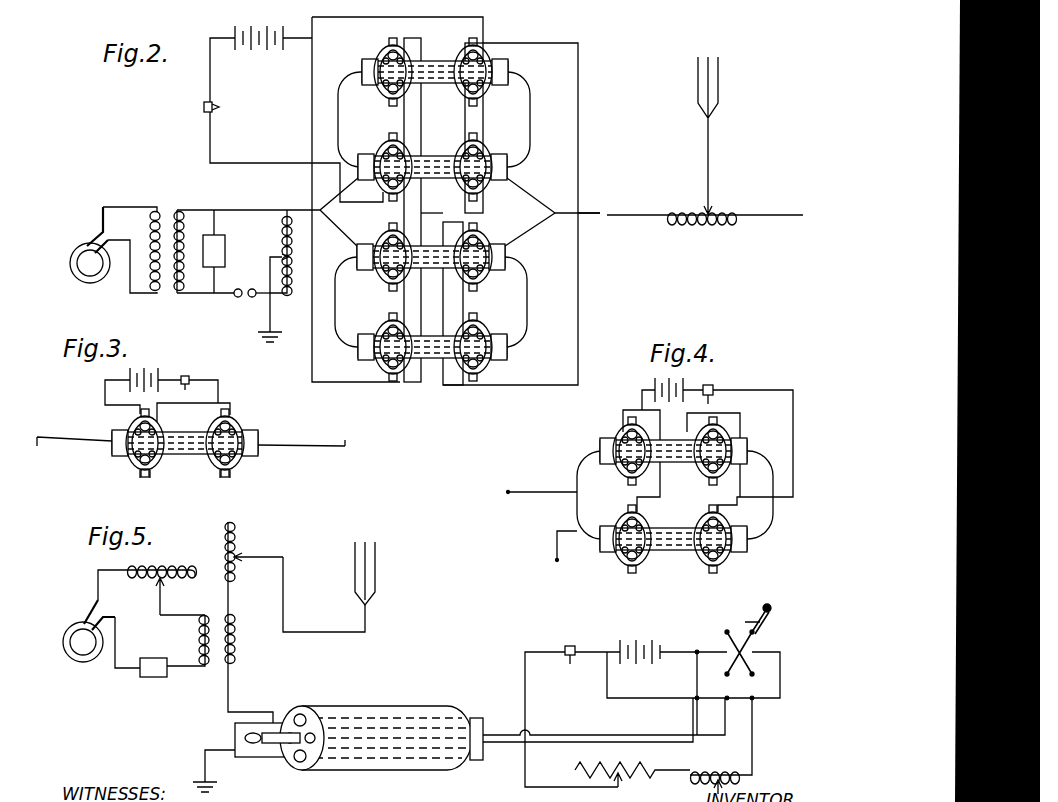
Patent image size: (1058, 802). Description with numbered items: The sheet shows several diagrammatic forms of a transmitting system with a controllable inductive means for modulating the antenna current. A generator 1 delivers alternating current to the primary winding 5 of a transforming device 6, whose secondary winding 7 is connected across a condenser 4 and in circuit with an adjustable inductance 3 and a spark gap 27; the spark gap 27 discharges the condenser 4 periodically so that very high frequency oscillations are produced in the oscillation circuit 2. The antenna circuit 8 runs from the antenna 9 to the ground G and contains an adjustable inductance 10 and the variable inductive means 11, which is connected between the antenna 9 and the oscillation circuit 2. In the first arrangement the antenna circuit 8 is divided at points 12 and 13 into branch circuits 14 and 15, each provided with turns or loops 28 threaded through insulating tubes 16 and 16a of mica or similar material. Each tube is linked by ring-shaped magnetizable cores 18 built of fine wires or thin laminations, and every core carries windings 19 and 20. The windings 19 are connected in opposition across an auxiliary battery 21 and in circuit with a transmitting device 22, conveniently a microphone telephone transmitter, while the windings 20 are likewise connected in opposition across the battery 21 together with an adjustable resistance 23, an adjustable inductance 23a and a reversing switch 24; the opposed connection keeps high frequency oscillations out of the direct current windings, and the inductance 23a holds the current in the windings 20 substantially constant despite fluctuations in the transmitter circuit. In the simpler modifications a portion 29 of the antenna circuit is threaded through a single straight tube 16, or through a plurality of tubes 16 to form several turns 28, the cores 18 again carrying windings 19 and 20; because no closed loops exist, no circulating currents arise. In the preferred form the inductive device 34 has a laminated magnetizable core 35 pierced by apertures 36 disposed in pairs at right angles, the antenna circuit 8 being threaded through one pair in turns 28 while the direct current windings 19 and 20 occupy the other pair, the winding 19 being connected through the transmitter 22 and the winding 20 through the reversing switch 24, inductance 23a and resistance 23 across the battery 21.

In FIG. 2, the generator 1 is at (90, 245).
In FIG. 5, the generator 1 is at (89, 631).
In FIG. 2, the oscillation circuit 2 is at (245, 210).
In FIG. 2, the adjustable inductance 3 is at (281, 234).
In FIG. 2, the condenser 4 is at (226, 252).
In FIG. 5, the condenser 4 is at (141, 647).
In FIG. 2, the primary winding 5 is at (150, 236).
In FIG. 5, the primary winding 5 is at (151, 590).
In FIG. 2, the transforming device 6 is at (168, 207).
In FIG. 2, the secondary winding 7 is at (186, 236).
In FIG. 5, the secondary winding 7 is at (188, 640).
In FIG. 2, the antenna circuit 8 is at (628, 212).
In FIG. 5, the antenna circuit 8 is at (235, 680).
In FIG. 2, the antenna 9 is at (720, 95).
In FIG. 5, the antenna 9 is at (365, 573).
In FIG. 2, the adjustable inductance 10 is at (722, 214).
In FIG. 2, the variable inductive means 11 is at (445, 201).
In FIG. 2, the point 12 is at (335, 216).
In FIG. 3, the point 12 is at (73, 454).
In FIG. 4, the point 12 is at (530, 506).
In FIG. 2, the point 13 is at (557, 216).
In FIG. 3, the point 13 is at (341, 450).
In FIG. 4, the point 13 is at (552, 550).
In FIG. 2, the branch circuit 14 is at (530, 186).
In FIG. 2, the branch circuit 15 is at (520, 235).
In FIG. 2, the insulating tube 16 is at (440, 156).
In FIG. 3, the insulating tube 16 is at (193, 456).
In FIG. 4, the insulating tube 16 is at (670, 440).
In FIG. 2, the insulating tube 16a is at (436, 334).
In FIG. 2, the magnetizable core 18 is at (488, 70).
In FIG. 3, the magnetizable core 18 is at (163, 428).
In FIG. 4, the magnetizable core 18 is at (616, 440).
In FIG. 2, the winding 19 is at (395, 42).
In FIG. 3, the winding 19 is at (140, 414).
In FIG. 4, the winding 19 is at (632, 418).
In FIG. 5, the winding 19 is at (270, 745).
In FIG. 2, the winding 20 is at (393, 102).
In FIG. 3, the winding 20 is at (187, 485).
In FIG. 4, the winding 20 is at (632, 478).
In FIG. 5, the winding 20 is at (276, 745).
In FIG. 2, the auxiliary battery 21 is at (271, 24).
In FIG. 3, the auxiliary battery 21 is at (150, 375).
In FIG. 4, the auxiliary battery 21 is at (708, 445).
In FIG. 5, the auxiliary battery 21 is at (652, 640).
In FIG. 2, the transmitting device 22 is at (216, 106).
In FIG. 3, the transmitting device 22 is at (190, 378).
In FIG. 4, the transmitting device 22 is at (715, 388).
In FIG. 5, the transmitting device 22 is at (570, 665).
In FIG. 5, the adjustable resistance 23 is at (632, 782).
In FIG. 5, the adjustable inductance 23a is at (720, 773).
In FIG. 5, the reversing switch 24 is at (770, 633).
In FIG. 2, the spark gap 27 is at (238, 298).
In FIG. 2, the turn or loop 28 is at (530, 133).
In FIG. 4, the turn or loop 28 is at (776, 478).
In FIG. 5, the turn or loop 28 is at (255, 722).
In FIG. 3, the portion of the antenna circuit 29 is at (288, 445).
In FIG. 4, the portion of the antenna circuit 29 is at (548, 494).
In FIG. 5, the inductive device 34 is at (411, 700).
In FIG. 5, the magnetizable core 35 is at (346, 707).
In FIG. 5, the aperture 36 is at (312, 732).
In FIG. 2, the ground G is at (272, 325).